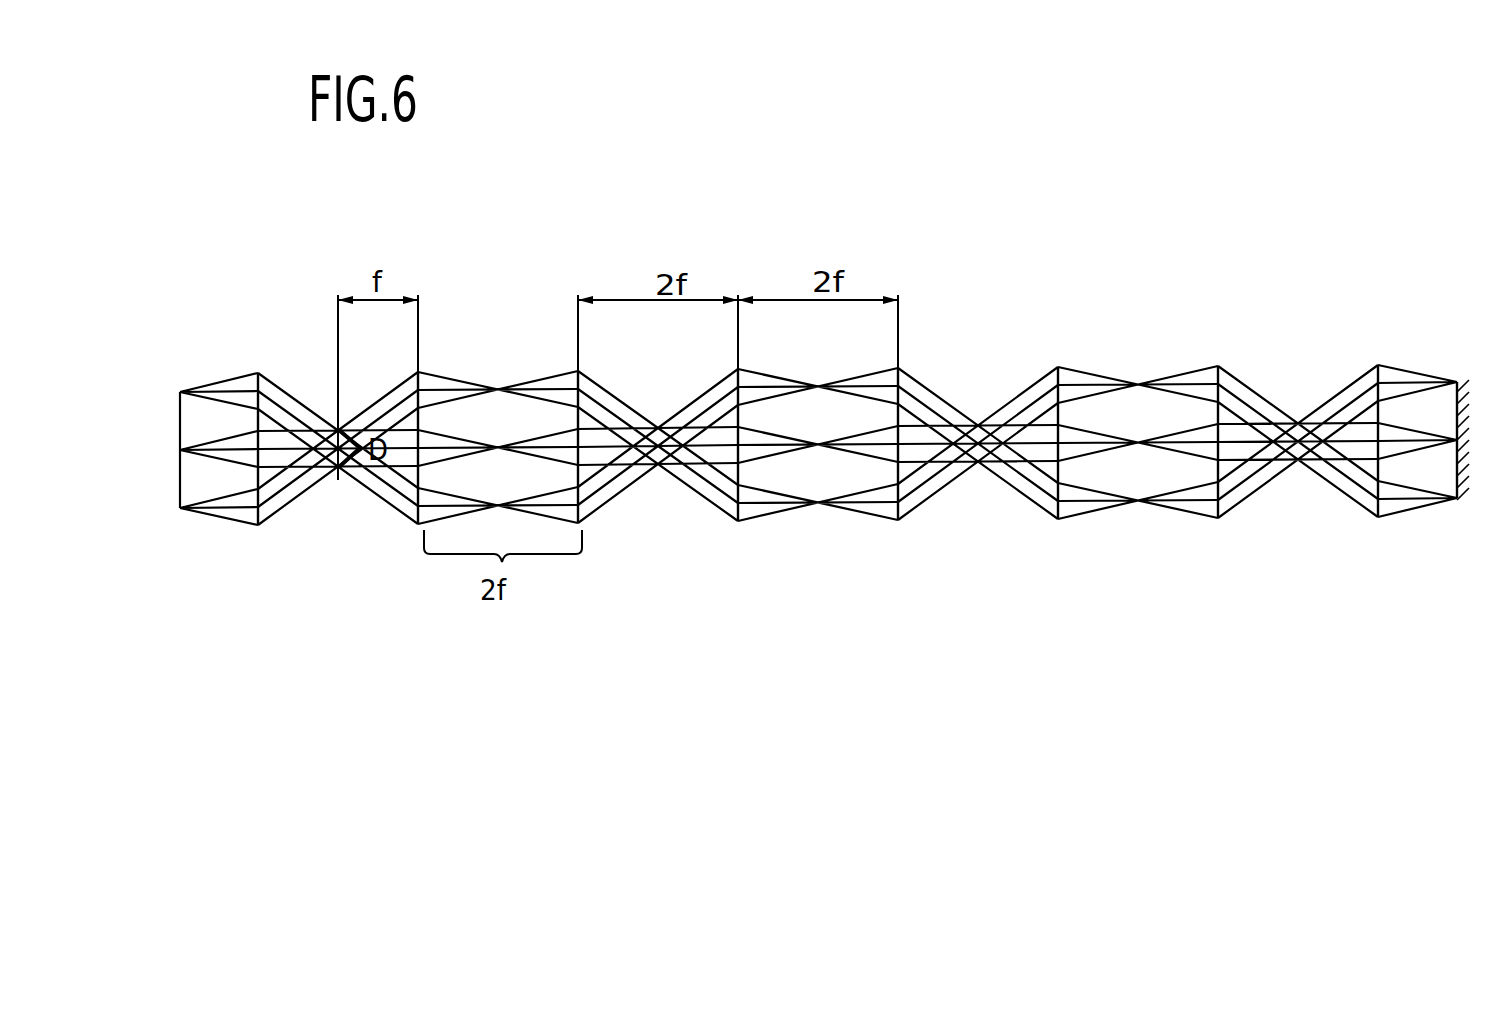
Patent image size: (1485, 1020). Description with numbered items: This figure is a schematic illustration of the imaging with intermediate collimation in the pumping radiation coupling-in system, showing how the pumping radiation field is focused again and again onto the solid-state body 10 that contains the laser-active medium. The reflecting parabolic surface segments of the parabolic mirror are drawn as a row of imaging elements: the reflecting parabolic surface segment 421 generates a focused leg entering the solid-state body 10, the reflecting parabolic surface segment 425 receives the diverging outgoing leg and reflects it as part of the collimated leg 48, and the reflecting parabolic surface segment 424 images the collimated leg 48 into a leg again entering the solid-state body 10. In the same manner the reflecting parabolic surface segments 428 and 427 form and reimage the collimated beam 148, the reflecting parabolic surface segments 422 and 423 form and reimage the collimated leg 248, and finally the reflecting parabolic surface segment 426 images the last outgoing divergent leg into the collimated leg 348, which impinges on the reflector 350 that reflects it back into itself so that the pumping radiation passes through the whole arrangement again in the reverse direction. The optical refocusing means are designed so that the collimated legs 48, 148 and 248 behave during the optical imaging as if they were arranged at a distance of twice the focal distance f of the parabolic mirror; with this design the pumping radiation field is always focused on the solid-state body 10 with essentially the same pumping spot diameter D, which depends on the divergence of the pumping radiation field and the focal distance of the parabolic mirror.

The solid-state body 10 is at (338, 480).
The reflecting parabolic surface segment 421 is at (266, 519).
The reflecting parabolic surface segment 422 is at (1214, 516).
The reflecting parabolic surface segment 423 is at (1056, 514).
The reflecting parabolic surface segment 424 is at (594, 519).
The reflecting parabolic surface segment 425 is at (420, 518).
The reflecting parabolic surface segment 426 is at (1374, 516).
The reflecting parabolic surface segment 427 is at (900, 514).
The reflecting parabolic surface segment 428 is at (740, 516).
The collimated leg 48 is at (500, 348).
The collimated beam 148 is at (808, 526).
The collimated leg 248 is at (1137, 503).
The collimated leg 348 is at (1420, 370).
The reflector 350 is at (1455, 500).